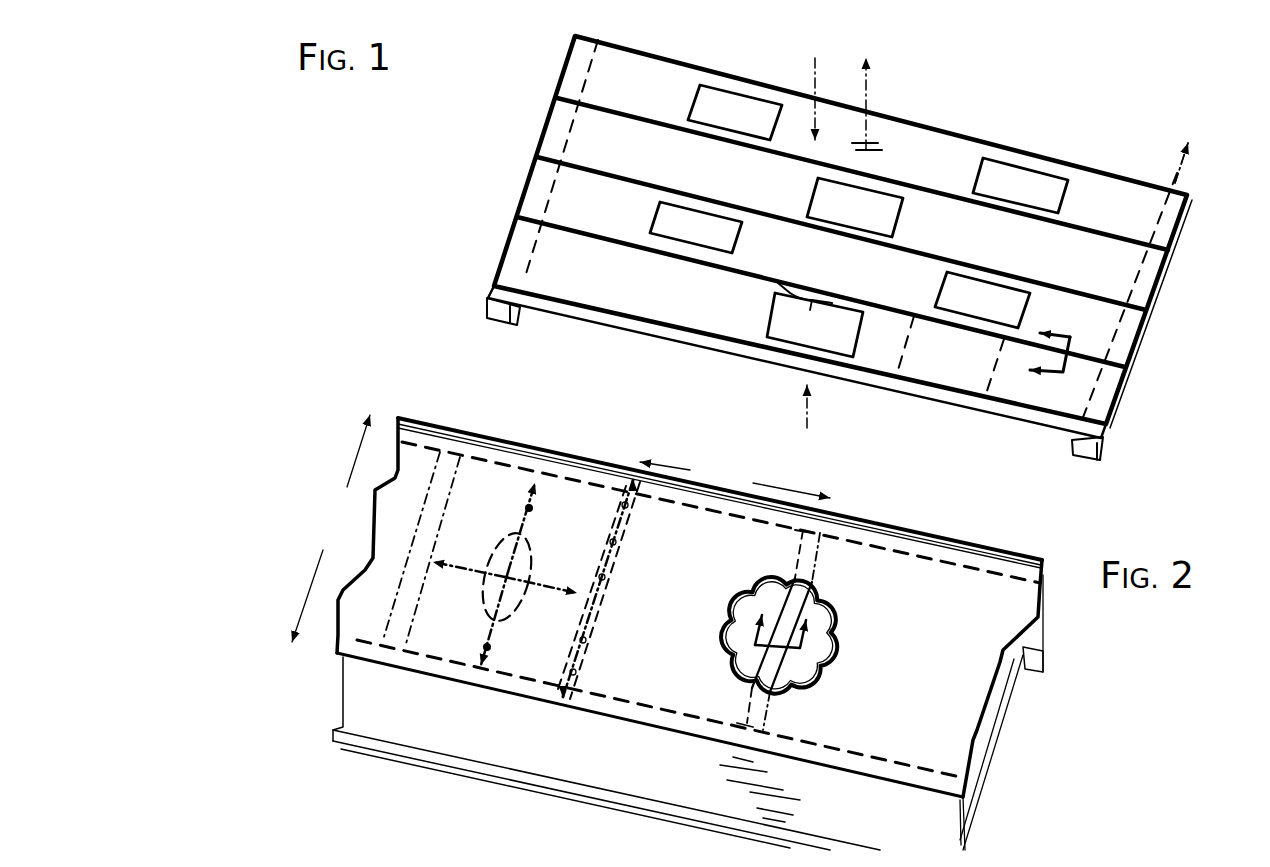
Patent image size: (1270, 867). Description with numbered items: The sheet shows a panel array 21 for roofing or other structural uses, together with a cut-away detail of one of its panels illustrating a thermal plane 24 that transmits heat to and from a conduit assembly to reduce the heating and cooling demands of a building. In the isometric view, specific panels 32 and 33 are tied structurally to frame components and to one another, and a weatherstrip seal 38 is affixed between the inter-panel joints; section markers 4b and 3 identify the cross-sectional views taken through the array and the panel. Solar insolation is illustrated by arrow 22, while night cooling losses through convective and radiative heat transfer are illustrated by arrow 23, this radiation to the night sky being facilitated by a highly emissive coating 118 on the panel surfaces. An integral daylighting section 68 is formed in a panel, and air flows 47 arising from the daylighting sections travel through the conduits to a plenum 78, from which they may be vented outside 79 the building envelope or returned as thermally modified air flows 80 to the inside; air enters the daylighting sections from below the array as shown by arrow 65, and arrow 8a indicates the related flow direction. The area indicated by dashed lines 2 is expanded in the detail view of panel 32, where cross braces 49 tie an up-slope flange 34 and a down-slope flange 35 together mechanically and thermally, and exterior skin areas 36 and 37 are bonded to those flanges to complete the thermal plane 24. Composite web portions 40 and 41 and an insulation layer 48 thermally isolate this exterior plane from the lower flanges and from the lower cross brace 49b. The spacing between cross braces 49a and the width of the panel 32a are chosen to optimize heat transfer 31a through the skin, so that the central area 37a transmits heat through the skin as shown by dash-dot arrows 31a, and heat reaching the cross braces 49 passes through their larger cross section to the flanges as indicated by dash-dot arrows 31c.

In FIG. 1, the panel array 21 is at (1165, 61).
In FIG. 1, the weatherstrip seal 38 is at (560, 93).
In FIG. 1, the panel 33 is at (570, 202).
In FIG. 1, the panel 32 is at (550, 273).
In FIG. 1, the dashed lines 2 is at (928, 365).
In FIG. 1, the daylighting section 68 is at (785, 328).
In FIG. 1, the air flows 47 is at (817, 290).
In FIG. 1, the direction arrow 8a is at (810, 275).
In FIG. 1, the solar insolation 22 is at (818, 86).
In FIG. 1, the night cooling losses 23 is at (868, 91).
In FIG. 1, the emissive coating 118 is at (872, 148).
In FIG. 1, the flows outside 79 is at (1187, 148).
In FIG. 1, the thermally modified air flows 80 is at (1181, 163).
In FIG. 1, the air flows into the daylighting sections 65 is at (825, 408).
In FIG. 1, the section marker 4b is at (1068, 351).
In FIG. 1, the plenum 78 is at (1090, 453).
In FIG. 2, the thermal plane 24 is at (494, 408).
In FIG. 2, the exterior skin area 37 is at (905, 743).
In FIG. 2, the up-slope flange 34 is at (1027, 558).
In FIG. 2, the composite web portion 40 is at (1035, 639).
In FIG. 2, the cross brace 49b is at (1015, 680).
In FIG. 2, the composite web portion 41 is at (362, 691).
In FIG. 2, the down-slope flange 35 is at (960, 777).
In FIG. 2, the exterior skin area 36 is at (930, 582).
In FIG. 2, the width of the panel 32a is at (331, 528).
In FIG. 2, the heat transfer 31a is at (503, 523).
In FIG. 2, the central area 37a is at (512, 588).
In FIG. 2, the heat transfer to flanges 31c is at (598, 615).
In FIG. 2, the spacing between cross braces 49a is at (735, 479).
In FIG. 2, the cross brace 49 is at (620, 542).
In FIG. 2, the insulation layer 48 is at (748, 657).
In FIG. 2, the section marker 3 is at (780, 647).